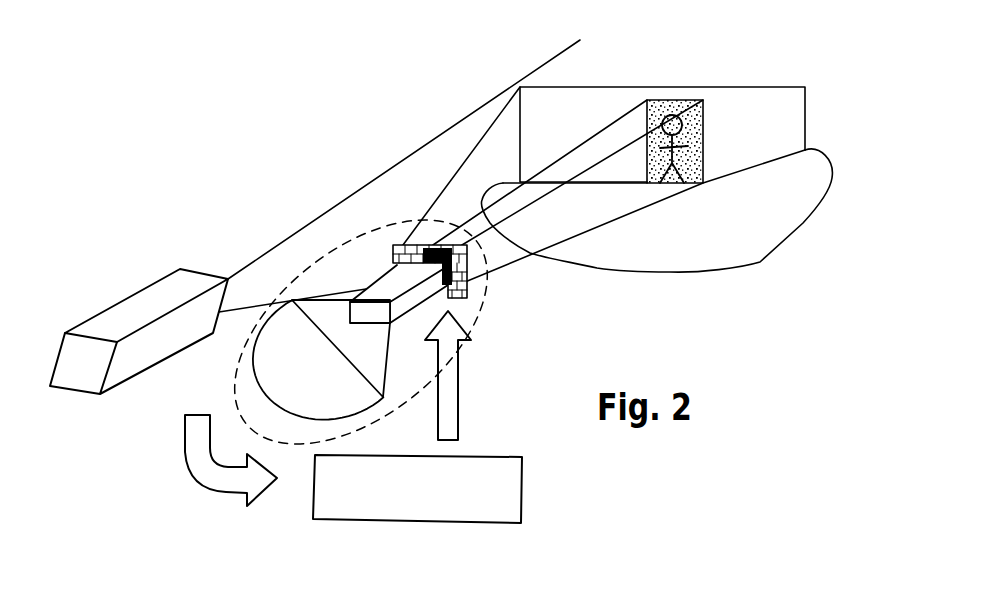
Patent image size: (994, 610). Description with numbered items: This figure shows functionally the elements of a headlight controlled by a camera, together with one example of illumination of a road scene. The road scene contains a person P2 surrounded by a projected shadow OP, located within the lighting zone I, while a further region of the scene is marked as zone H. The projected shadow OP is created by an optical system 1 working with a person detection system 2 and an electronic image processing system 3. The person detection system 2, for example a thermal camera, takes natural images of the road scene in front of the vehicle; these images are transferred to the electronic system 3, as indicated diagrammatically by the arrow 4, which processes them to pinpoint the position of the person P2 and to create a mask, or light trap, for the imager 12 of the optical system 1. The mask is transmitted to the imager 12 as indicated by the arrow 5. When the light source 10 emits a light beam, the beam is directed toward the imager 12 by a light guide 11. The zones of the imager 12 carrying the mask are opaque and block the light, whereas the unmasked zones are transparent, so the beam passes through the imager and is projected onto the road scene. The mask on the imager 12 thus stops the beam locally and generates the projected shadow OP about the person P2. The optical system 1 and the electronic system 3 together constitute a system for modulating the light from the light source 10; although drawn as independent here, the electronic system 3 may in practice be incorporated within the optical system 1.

The optical system 1 is at (297, 442).
The person detection system 2 is at (132, 308).
The electronic image processing system 3 is at (444, 503).
The arrow 4 is at (200, 468).
The arrow 5 is at (455, 418).
The light source 10 is at (265, 360).
The light guide 11 is at (386, 280).
The imager 12 is at (470, 297).
The person P2 is at (673, 103).
The projected shadow OP is at (705, 135).
The lighting zone zone I is at (590, 85).
The element zone H is at (747, 250).